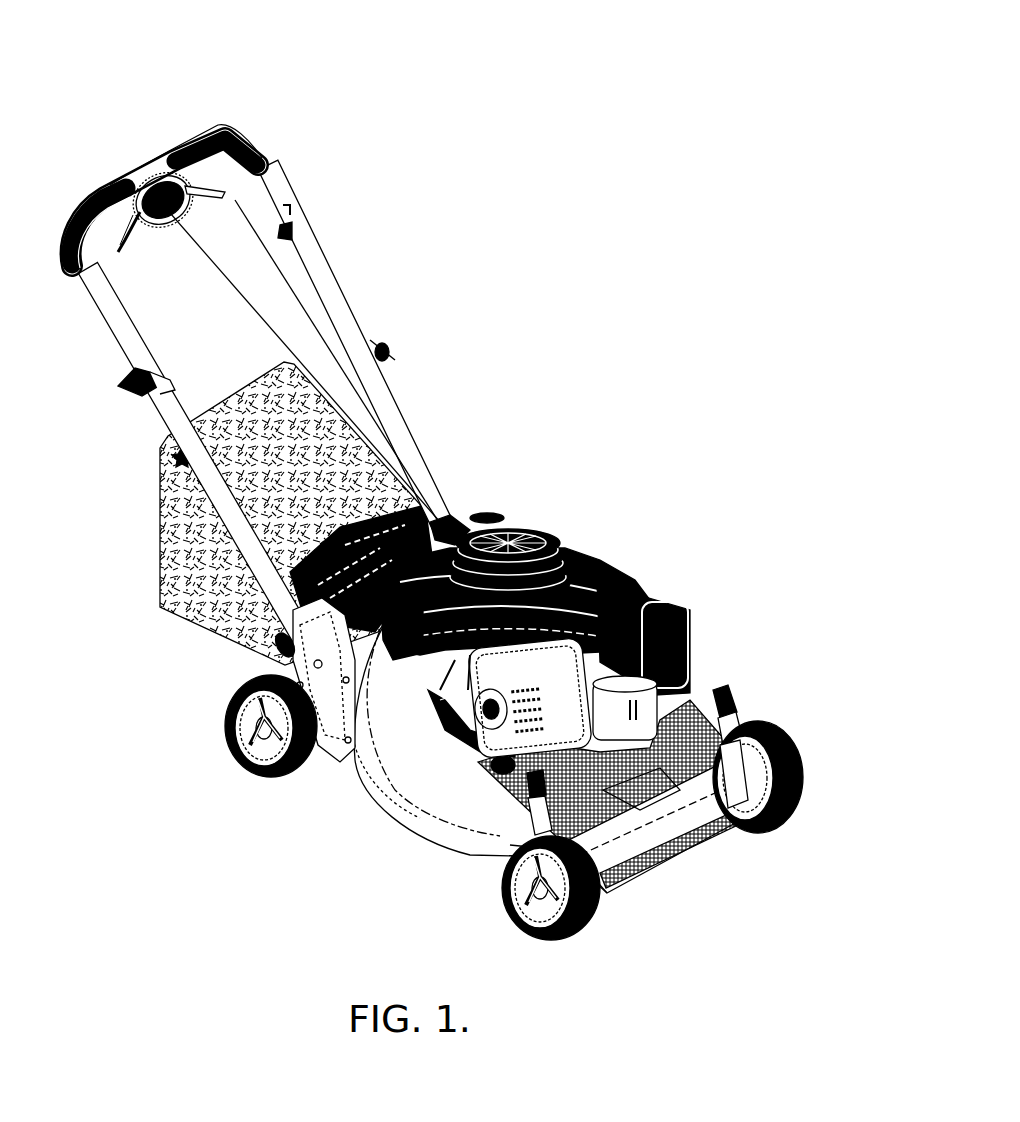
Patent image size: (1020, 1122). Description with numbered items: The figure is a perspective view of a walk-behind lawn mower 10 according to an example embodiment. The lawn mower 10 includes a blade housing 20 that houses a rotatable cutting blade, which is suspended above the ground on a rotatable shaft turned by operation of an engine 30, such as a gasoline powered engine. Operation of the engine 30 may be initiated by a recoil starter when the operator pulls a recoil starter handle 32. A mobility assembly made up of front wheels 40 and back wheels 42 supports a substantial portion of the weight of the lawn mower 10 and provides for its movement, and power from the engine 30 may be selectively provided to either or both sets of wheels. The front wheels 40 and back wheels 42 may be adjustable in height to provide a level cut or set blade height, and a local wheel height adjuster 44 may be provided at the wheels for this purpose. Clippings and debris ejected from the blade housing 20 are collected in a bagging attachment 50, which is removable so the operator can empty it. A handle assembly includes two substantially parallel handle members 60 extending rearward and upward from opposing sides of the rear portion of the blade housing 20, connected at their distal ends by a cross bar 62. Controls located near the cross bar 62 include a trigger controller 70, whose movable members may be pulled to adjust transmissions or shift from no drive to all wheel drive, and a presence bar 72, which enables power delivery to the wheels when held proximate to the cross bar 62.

The walk-behind lawn mower 10 is at (616, 80).
The blade housing 20 is at (677, 823).
The engine 30 is at (605, 660).
The recoil starter handle 32 is at (117, 390).
The front wheels 40 is at (531, 922).
The back wheels 42 is at (246, 753).
The local wheel height adjuster 44 is at (278, 650).
The bagging attachment 50 is at (158, 550).
The handle members 60 is at (318, 262).
The cross bar 62 is at (197, 147).
The trigger controller 70 is at (123, 225).
The presence bar 72 is at (202, 122).